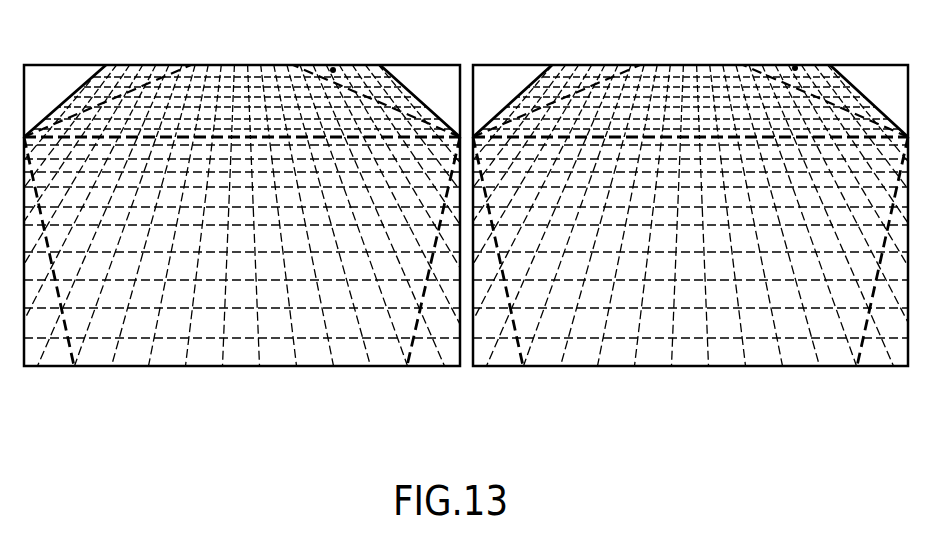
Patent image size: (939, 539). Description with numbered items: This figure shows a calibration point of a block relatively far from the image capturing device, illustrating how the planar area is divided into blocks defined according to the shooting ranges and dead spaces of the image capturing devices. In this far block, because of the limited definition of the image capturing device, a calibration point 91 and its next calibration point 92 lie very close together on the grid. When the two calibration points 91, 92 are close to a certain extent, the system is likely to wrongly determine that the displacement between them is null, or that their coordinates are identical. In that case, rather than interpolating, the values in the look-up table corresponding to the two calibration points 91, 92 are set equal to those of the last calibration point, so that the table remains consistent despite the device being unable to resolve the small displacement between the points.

The calibration point 91 is at (795, 66).
The next calibration point 92 is at (333, 68).